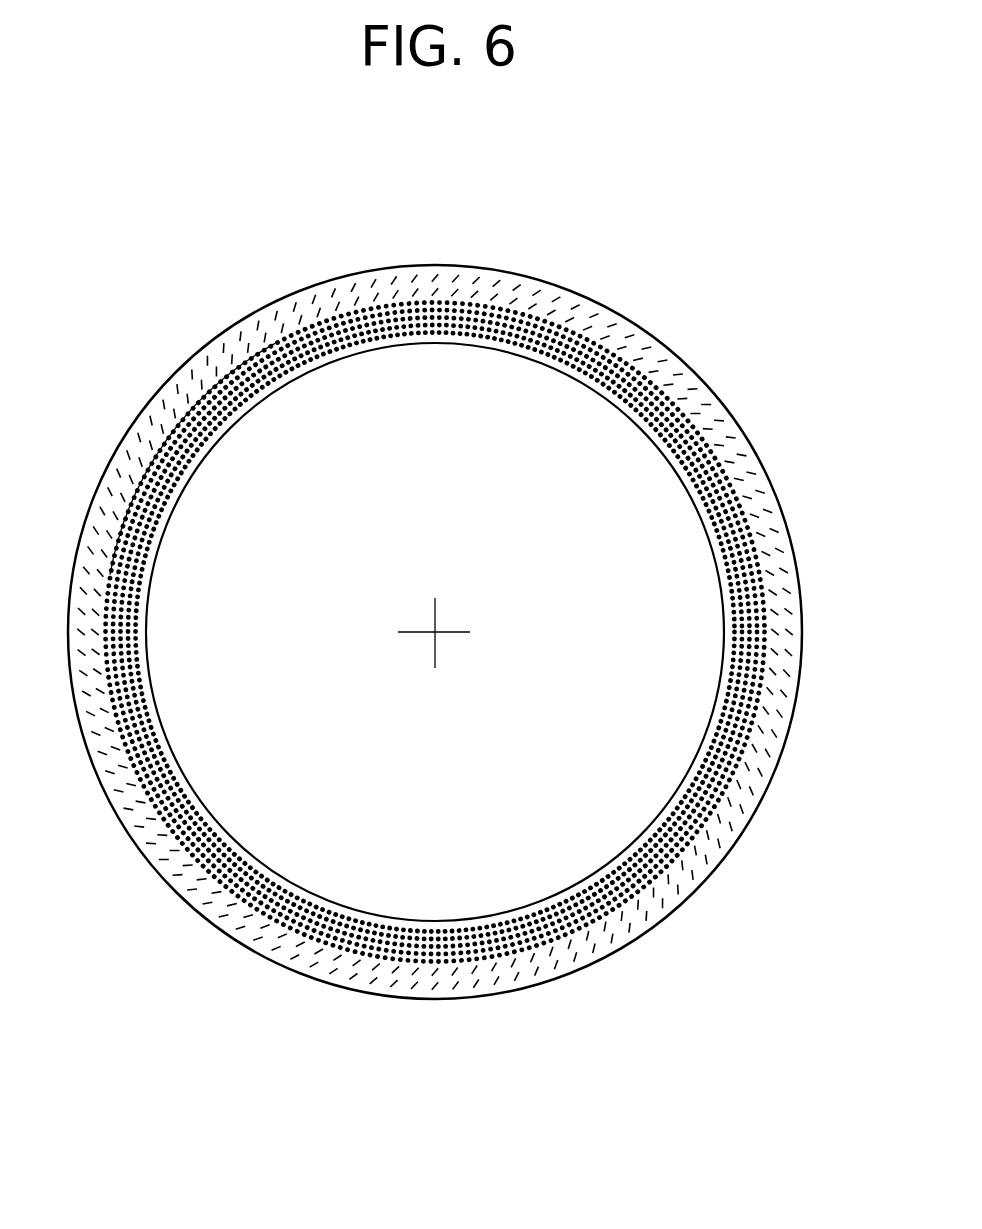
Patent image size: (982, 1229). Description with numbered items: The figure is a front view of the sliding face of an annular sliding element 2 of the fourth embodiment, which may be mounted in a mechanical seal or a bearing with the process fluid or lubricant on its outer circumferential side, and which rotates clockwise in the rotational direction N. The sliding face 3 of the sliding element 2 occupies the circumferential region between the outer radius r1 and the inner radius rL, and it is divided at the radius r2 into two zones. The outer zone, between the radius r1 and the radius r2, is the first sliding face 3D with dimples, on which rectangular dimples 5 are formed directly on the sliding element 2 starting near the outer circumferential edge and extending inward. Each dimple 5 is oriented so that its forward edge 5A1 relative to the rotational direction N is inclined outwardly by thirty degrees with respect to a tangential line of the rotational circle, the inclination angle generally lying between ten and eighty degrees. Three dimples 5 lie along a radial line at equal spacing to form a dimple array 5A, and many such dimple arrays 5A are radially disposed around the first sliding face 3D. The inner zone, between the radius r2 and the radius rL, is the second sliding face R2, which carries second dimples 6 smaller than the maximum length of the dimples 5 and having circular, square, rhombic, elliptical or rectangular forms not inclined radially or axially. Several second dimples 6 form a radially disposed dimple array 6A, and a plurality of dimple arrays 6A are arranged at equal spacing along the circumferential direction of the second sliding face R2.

The sliding element 2 is at (140, 367).
The sliding face 3 is at (728, 433).
The first sliding face with dimples 3D is at (763, 490).
The dimple 5 is at (437, 571).
The dimple array 5A is at (437, 571).
The forward edge 5A1 is at (762, 758).
The second dimple 6 is at (435, 632).
The dimple array 6A is at (712, 742).
The second sliding face R2 is at (717, 505).
The radius r1 is at (190, 362).
The radius r2 is at (435, 632).
The radius rL is at (435, 632).
The rotational direction N is at (644, 304).